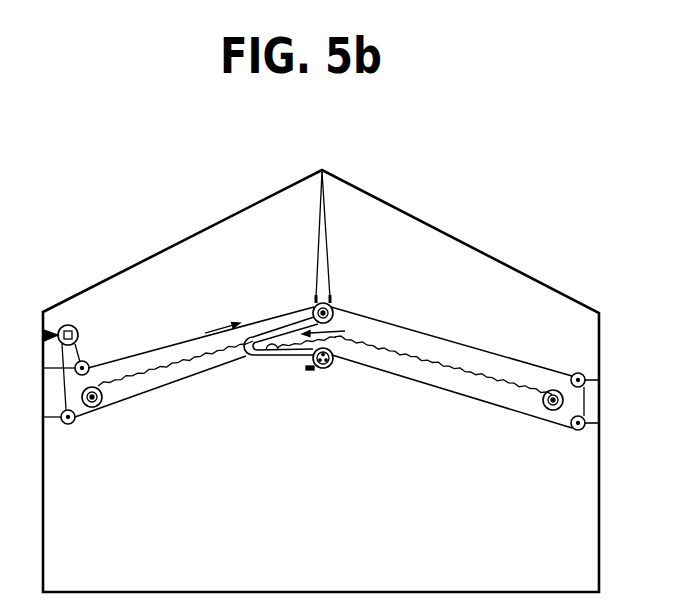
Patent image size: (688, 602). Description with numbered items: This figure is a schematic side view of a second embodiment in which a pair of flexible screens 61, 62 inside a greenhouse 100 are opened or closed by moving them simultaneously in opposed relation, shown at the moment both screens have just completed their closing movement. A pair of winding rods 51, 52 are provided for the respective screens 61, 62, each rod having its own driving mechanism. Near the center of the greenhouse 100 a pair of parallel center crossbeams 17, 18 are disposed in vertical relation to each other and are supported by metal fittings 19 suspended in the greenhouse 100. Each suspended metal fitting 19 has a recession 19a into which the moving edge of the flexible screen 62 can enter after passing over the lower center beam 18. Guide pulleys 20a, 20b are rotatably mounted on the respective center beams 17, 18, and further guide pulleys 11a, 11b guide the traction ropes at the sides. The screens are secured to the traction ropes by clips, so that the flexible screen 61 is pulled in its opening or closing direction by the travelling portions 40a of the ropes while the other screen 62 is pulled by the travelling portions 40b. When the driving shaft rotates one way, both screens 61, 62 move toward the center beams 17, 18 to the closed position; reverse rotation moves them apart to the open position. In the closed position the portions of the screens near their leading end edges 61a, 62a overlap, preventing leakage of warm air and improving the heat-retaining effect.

The greenhouse 100 is at (457, 223).
The guide pulley 11a is at (578, 431).
The guide pulley 11b is at (577, 372).
The center crossbeam 17 is at (317, 304).
The lower center beam 18 is at (323, 370).
The suspended metal fitting 19 is at (251, 361).
The recession 19a is at (343, 335).
The guide pulley 20a is at (341, 302).
The guide pulley 20b is at (343, 363).
The travelling portion of traction rope 40a is at (133, 354).
The travelling portion of traction rope 40b is at (437, 392).
The winding rod 51 is at (92, 408).
The winding rod 52 is at (548, 406).
The flexible screen 61 is at (186, 362).
The leading end edge 61a is at (315, 308).
The flexible screen 62 is at (427, 359).
The leading end edge 62a is at (274, 356).